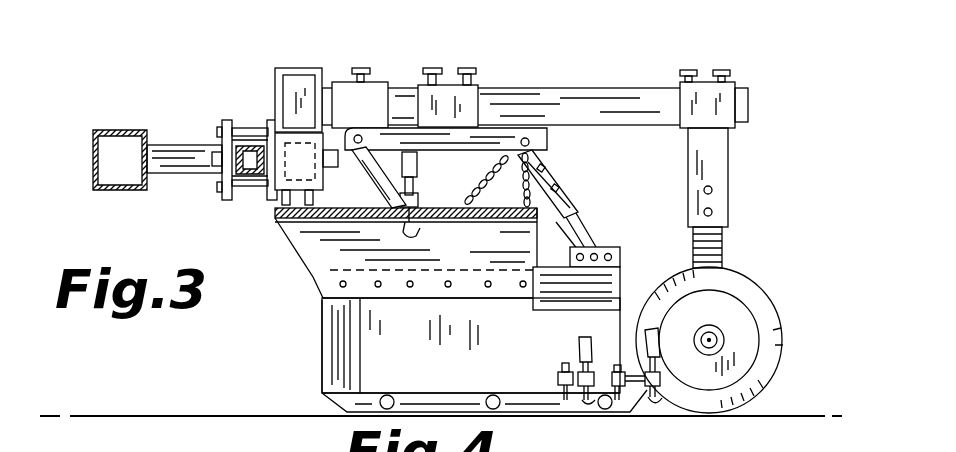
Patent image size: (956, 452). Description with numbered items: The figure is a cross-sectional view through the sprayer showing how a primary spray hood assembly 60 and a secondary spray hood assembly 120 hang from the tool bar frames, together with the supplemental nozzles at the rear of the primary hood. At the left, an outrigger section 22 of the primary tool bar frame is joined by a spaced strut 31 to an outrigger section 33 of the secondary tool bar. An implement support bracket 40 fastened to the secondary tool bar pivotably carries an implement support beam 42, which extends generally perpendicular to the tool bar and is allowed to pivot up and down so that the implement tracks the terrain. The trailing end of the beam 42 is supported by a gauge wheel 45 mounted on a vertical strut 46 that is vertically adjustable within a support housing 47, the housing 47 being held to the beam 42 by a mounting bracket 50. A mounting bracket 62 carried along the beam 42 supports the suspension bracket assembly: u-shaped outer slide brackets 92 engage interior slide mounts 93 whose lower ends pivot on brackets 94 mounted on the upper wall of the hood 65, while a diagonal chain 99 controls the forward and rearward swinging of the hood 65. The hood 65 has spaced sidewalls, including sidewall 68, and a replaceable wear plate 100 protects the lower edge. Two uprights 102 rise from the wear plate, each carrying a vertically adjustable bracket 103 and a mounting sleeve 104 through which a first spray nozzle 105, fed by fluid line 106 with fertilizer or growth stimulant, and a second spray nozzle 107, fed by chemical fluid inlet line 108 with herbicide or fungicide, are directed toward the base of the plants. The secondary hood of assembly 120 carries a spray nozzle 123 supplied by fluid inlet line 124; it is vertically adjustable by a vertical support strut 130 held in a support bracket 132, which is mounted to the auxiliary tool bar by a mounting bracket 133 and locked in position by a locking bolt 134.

The outrigger section 22 is at (92, 152).
The strut 31 is at (160, 137).
The support bracket 132 is at (268, 125).
The mounting bracket 133 is at (218, 190).
The outrigger section 33 is at (255, 192).
The implement support bracket 40 is at (275, 80).
The vertical support strut 130 is at (338, 48).
The locking bolt 134 is at (361, 98).
The mounting bracket 62 is at (470, 88).
The implement support beam 42 is at (618, 60).
The mounting bracket 50 is at (768, 60).
The support housing 47 is at (725, 150).
The vertical strut 46 is at (722, 238).
The gauge wheel 45 is at (780, 297).
The chemical fluid inlet line 108 is at (655, 332).
The second spray nozzle 107 is at (660, 405).
The first spray nozzle 105 is at (590, 405).
The outer slide bracket 92 is at (375, 182).
The interior slide mount 93 is at (580, 222).
The bracket 94 is at (612, 250).
The chain 99 is at (474, 190).
The fluid inlet line 124 is at (420, 163).
The spray nozzle 123 is at (425, 236).
The secondary spray hood assembly 120 is at (312, 285).
The hood 65 is at (316, 334).
The primary spray hood assembly 60 is at (316, 373).
The sidewall 68 is at (447, 348).
The wear plate 100 is at (420, 378).
The fluid line 106 is at (602, 295).
The mounting sleeve 104 is at (580, 385).
The vertically adjustable bracket 103 is at (560, 378).
The upright 102 is at (560, 390).